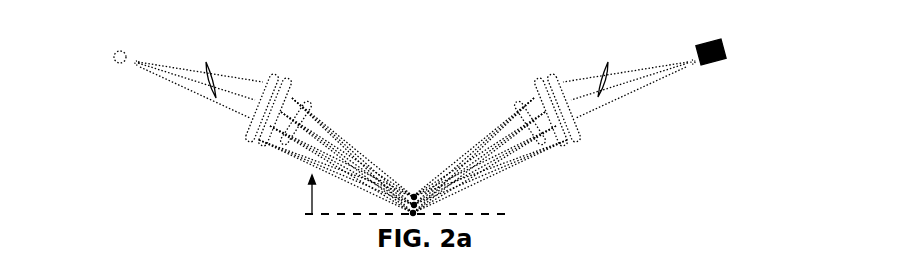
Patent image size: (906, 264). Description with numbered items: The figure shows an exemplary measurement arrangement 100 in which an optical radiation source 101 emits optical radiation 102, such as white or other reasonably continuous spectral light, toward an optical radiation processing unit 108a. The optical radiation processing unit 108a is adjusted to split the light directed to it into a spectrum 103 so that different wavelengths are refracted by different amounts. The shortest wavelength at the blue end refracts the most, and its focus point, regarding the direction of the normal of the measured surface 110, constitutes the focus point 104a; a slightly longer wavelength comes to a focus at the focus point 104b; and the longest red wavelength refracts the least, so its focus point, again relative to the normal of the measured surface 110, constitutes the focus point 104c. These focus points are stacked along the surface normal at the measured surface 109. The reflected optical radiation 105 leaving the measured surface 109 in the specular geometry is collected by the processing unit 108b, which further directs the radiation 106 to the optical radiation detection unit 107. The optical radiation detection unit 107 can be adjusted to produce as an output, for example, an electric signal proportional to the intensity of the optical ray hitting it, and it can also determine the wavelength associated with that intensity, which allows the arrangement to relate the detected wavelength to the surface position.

The measurement arrangement 100 is at (350, 41).
The optical radiation source 101 is at (106, 36).
The optical radiation 102 is at (223, 98).
The spectrum 103 is at (362, 135).
The focus point 104a is at (414, 197).
The focus point 104b is at (414, 205).
The focus point 104c is at (413, 213).
The reflected optical radiation 105 is at (461, 134).
The directed optical radiation 106 is at (588, 90).
The optical radiation detection unit 107 is at (727, 38).
The optical radiation processing unit 108a is at (258, 157).
The processing unit 108b is at (572, 160).
The measured surface 109 is at (429, 195).
The normal of measured surface 110 is at (310, 200).